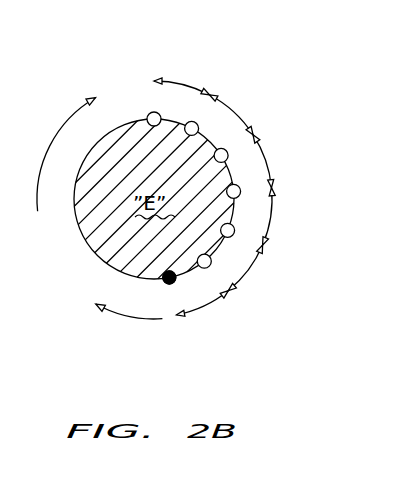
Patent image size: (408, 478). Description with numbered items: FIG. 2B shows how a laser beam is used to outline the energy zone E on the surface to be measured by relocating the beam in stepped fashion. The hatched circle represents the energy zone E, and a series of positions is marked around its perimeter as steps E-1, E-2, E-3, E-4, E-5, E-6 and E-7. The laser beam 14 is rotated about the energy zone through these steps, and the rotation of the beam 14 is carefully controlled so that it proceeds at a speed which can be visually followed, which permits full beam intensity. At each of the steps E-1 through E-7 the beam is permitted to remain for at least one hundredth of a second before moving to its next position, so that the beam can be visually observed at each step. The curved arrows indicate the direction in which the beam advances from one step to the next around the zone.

The beam 14 is at (166, 281).
The step E-1 is at (154, 106).
The step E-2 is at (198, 117).
The step E-3 is at (232, 148).
The step E-4 is at (247, 190).
The step E-5 is at (240, 235).
The step E-6 is at (212, 271).
The step E-7 is at (172, 290).